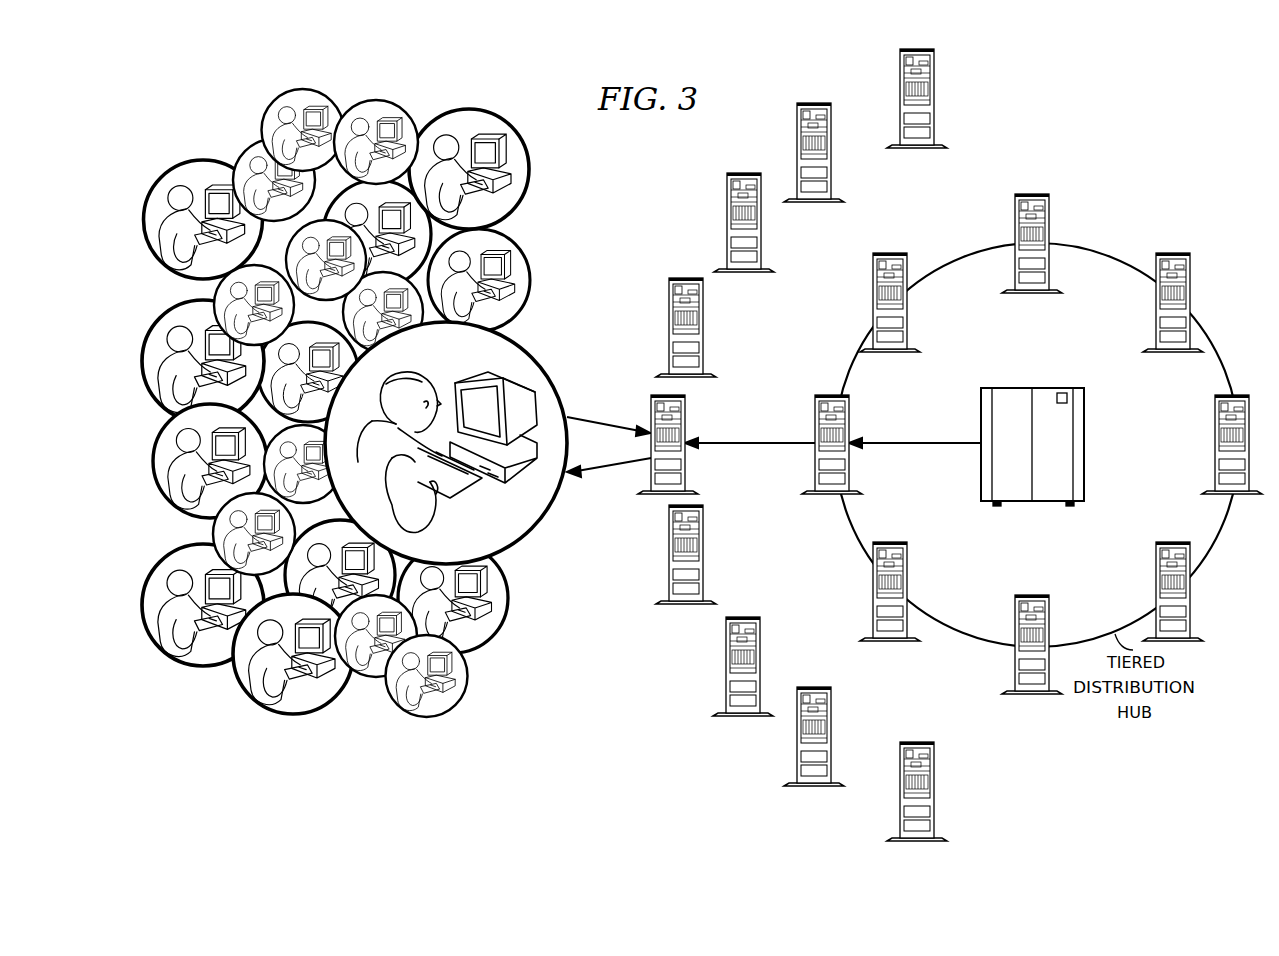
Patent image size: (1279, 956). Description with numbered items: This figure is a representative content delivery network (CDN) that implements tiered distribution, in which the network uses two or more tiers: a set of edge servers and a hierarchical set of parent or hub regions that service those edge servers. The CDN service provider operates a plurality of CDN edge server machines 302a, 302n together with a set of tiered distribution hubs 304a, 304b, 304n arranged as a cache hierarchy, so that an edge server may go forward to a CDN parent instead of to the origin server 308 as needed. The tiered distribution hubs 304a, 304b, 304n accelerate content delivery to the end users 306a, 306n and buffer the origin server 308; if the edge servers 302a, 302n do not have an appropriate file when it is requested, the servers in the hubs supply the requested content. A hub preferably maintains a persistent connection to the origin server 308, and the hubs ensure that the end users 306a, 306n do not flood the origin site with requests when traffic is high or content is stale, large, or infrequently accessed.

The CDN edge server machine 302a is at (936, 98).
The CDN edge server machine 302n is at (935, 793).
The tiered distribution hub 304a is at (1033, 193).
The tiered distribution hub 304b is at (1173, 253).
The tiered distribution hub 304n is at (890, 252).
The end users 306a is at (267, 717).
The end users 306n is at (497, 635).
The origin server 308 is at (1045, 388).